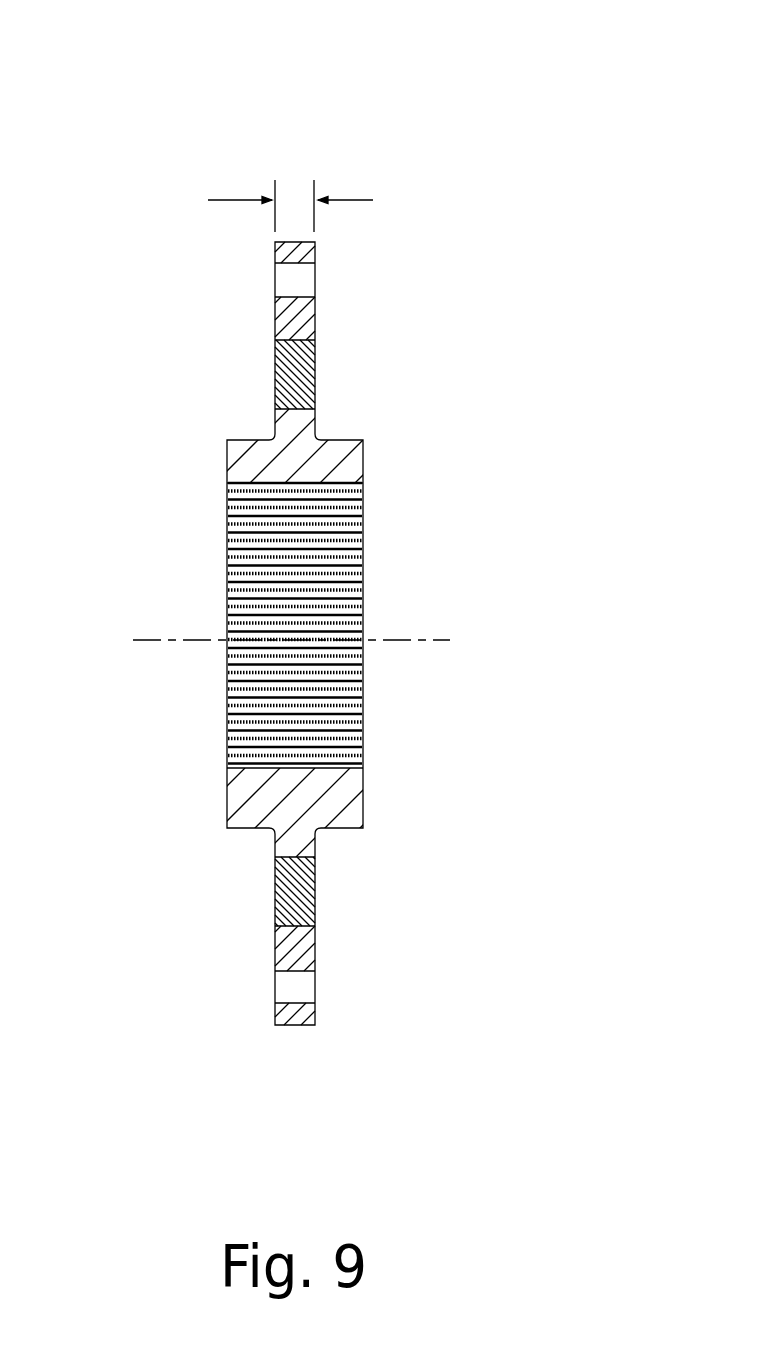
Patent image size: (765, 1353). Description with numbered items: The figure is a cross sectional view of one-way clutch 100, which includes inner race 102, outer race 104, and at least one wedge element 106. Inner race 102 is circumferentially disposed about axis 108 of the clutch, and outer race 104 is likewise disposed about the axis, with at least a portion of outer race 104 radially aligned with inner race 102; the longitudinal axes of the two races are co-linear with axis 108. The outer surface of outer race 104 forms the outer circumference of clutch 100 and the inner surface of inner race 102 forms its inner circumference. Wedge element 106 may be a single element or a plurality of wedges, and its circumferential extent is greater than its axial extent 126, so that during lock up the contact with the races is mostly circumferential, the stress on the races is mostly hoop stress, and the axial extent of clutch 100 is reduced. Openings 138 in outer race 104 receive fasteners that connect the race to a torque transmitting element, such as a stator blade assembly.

The one-way clutch 100 is at (197, 163).
The inner race 102 is at (362, 460).
The outer race 104 is at (317, 305).
The wedge element 106 is at (312, 370).
The axis 108 is at (383, 637).
The axial extent 126 is at (353, 197).
The openings 138 is at (290, 278).